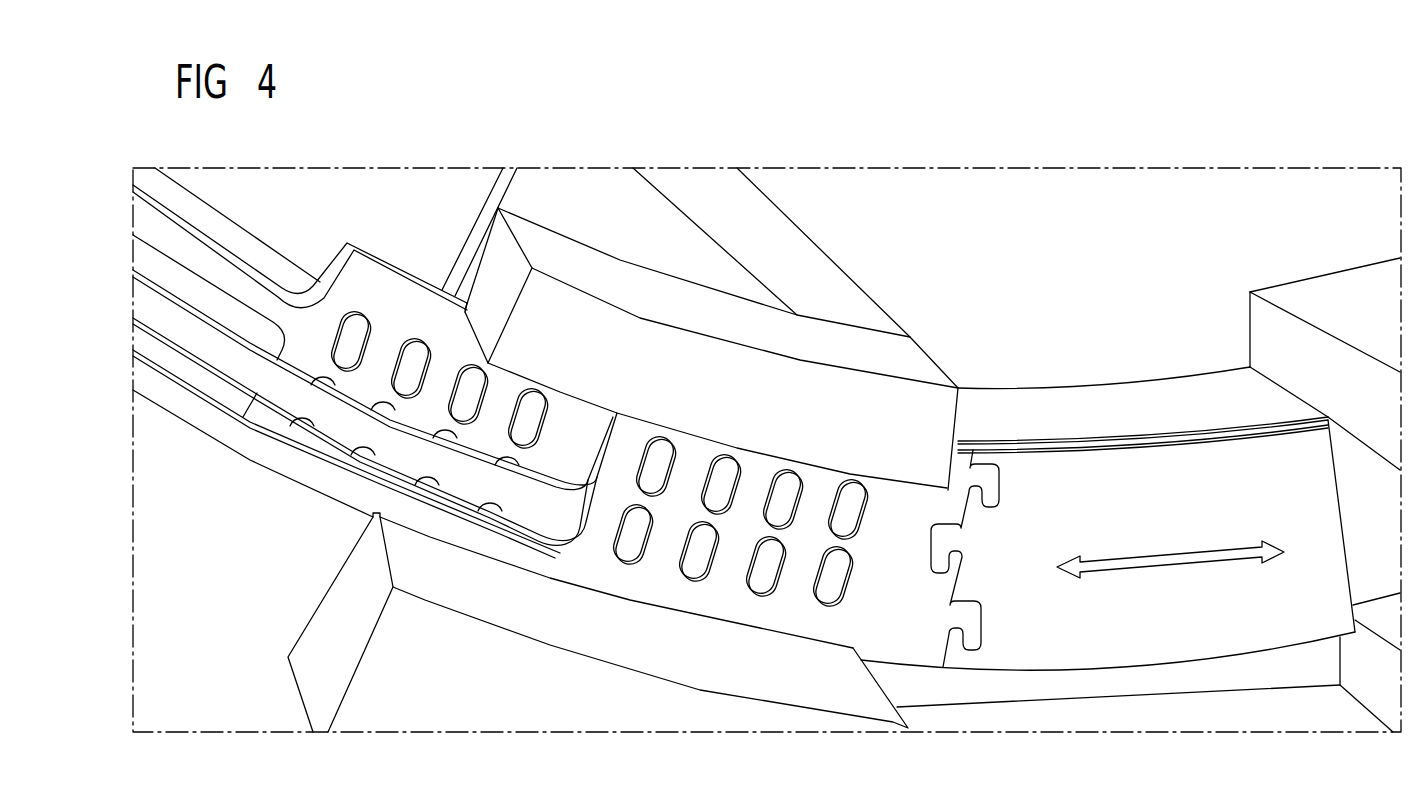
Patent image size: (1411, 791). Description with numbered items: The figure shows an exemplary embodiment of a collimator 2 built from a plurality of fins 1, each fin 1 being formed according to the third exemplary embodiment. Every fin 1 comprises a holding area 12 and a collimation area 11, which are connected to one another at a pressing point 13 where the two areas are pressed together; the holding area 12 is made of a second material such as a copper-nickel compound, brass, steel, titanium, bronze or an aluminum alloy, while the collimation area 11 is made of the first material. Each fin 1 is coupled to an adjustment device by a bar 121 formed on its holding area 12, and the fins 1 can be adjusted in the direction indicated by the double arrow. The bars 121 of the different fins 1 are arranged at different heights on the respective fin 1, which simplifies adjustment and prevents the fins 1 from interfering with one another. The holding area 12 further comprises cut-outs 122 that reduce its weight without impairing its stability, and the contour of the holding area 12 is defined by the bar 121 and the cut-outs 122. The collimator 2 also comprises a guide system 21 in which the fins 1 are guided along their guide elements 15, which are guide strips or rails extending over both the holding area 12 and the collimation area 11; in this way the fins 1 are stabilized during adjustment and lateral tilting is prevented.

The fin 1 is at (447, 582).
The collimator 2 is at (410, 215).
The collimation area 11 is at (1158, 465).
The holding area 12 is at (632, 430).
The pressing point 13 is at (978, 435).
The guide element 15 is at (1330, 418).
The guide system 21 is at (650, 290).
The bar 121 is at (243, 447).
The cut-out 122 is at (693, 566).